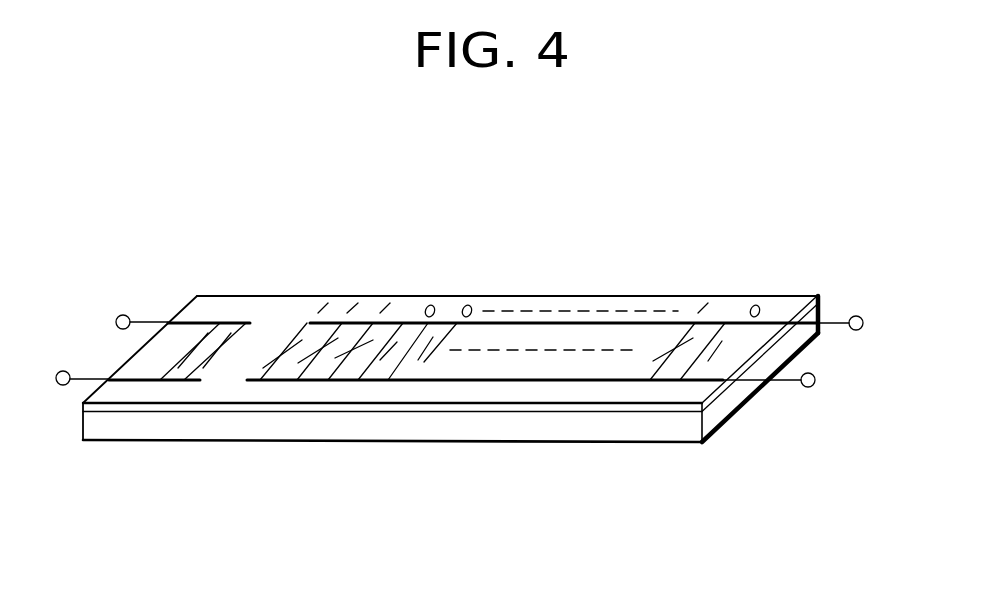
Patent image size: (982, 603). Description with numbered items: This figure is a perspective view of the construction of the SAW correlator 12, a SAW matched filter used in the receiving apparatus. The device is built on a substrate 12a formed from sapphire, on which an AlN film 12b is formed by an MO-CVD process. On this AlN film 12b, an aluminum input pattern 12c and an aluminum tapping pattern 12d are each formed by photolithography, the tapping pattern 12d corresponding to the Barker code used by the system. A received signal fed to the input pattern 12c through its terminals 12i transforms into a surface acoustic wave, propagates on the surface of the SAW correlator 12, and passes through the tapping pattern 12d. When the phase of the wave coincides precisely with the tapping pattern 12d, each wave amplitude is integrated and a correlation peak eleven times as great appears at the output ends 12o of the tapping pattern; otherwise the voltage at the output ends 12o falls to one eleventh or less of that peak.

The SAW correlator 12 is at (661, 287).
The substrate 12a is at (570, 442).
The AlN film 12b is at (447, 407).
The input pattern 12c is at (243, 323).
The tapping pattern 12d is at (530, 323).
The input terminals 12i is at (117, 315).
The output ends 12o is at (858, 330).